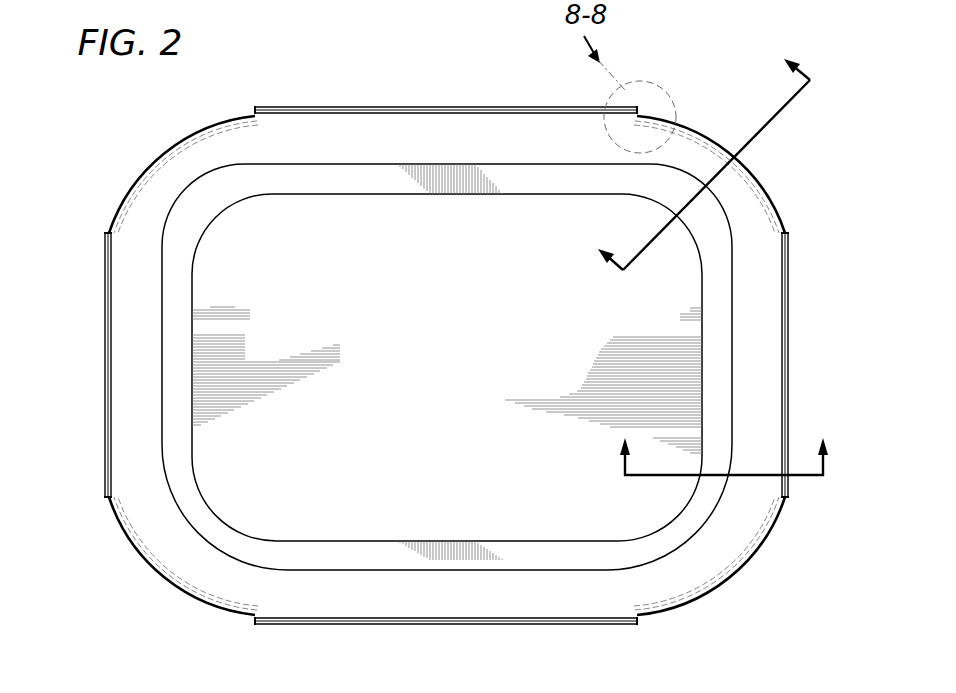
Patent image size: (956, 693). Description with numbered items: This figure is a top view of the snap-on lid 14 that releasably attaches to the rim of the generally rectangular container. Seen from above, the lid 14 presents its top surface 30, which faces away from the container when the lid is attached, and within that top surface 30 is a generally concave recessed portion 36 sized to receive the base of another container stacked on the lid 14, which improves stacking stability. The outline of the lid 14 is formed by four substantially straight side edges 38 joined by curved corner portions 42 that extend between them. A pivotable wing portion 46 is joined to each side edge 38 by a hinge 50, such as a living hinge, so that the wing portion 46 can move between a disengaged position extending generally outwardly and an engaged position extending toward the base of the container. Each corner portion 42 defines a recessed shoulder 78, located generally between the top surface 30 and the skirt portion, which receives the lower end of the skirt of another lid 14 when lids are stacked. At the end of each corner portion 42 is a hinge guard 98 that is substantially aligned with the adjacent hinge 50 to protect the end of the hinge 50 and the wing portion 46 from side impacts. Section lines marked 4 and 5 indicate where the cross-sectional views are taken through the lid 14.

The snap-on lid 14 is at (128, 595).
The top surface 30 is at (430, 264).
The recessed portion 36 is at (275, 215).
The side edges 38 is at (342, 118).
The curved corner portions 42 is at (165, 168).
The pivotable wing portion 46 is at (422, 110).
The hinge 50 is at (470, 112).
The recessed shoulder 78 is at (130, 185).
The hinge guard 98 is at (255, 108).
The section line 4- 4 is at (715, 438).
The section line 5- 5 is at (692, 151).